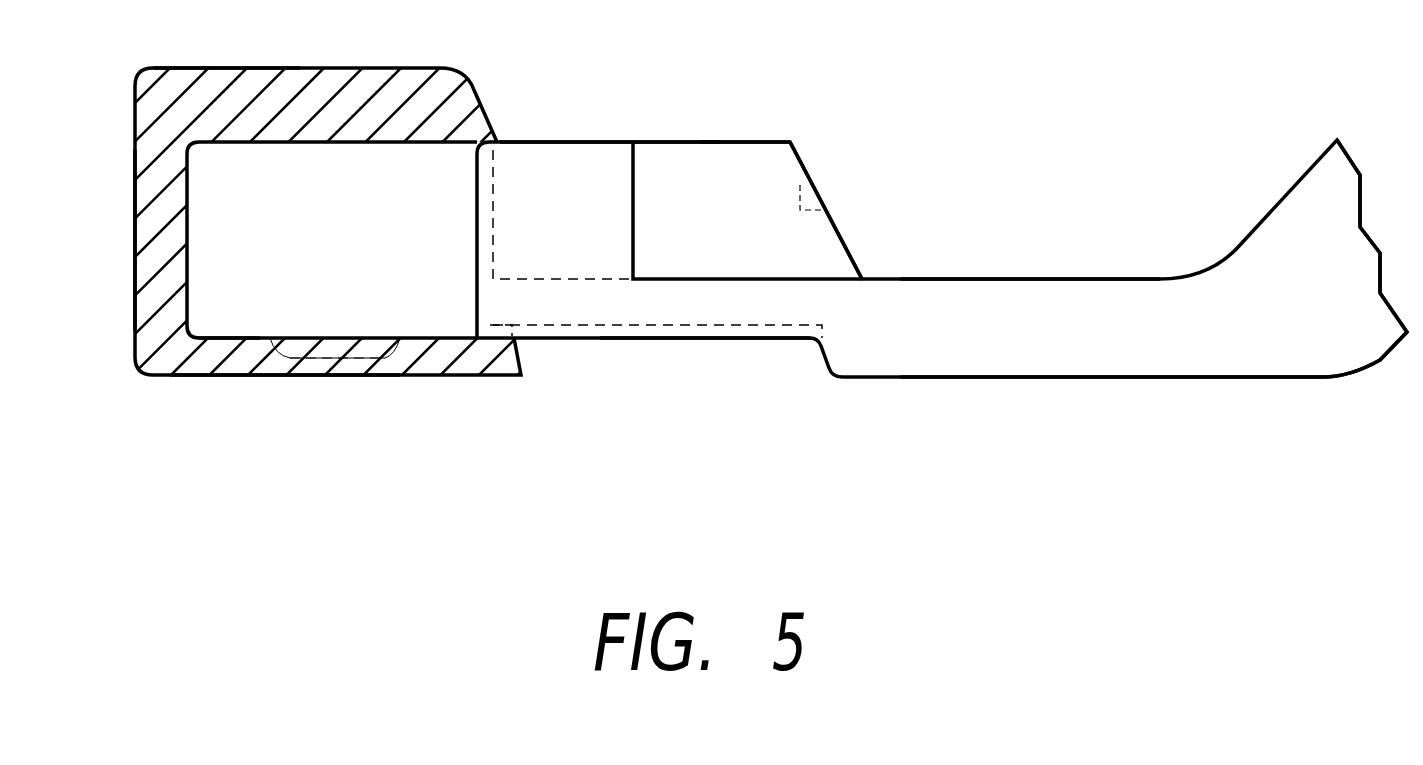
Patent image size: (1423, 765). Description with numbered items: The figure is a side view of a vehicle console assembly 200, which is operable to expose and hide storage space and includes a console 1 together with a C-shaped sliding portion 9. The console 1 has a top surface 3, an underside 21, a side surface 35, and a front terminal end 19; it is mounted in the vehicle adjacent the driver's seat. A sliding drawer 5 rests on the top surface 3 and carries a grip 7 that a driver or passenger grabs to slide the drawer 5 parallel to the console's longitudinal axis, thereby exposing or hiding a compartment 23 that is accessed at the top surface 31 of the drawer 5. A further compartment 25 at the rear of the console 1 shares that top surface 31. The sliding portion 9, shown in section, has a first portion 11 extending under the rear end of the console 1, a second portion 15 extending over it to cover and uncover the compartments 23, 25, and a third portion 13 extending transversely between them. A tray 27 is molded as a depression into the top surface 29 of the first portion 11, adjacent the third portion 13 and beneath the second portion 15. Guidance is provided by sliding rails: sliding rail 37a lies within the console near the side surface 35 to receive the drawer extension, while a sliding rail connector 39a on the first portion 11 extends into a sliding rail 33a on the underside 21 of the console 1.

The console 1 is at (1043, 323).
The top surface 3 is at (993, 279).
The sliding portion (drawer) 5 is at (763, 160).
The handle or grip 7 is at (807, 202).
The sliding portion 9 is at (163, 165).
The first portion 11 is at (268, 376).
The third portion 13 is at (135, 273).
The second portion 15 is at (172, 92).
The front terminal end 19 is at (1257, 337).
The underside (bottom surface) 21 is at (997, 378).
The compartment 23 is at (684, 142).
The compartment 25 is at (553, 140).
The tray 27 is at (298, 348).
The top surface 29 is at (222, 338).
The top surface 31 is at (613, 142).
The sliding rail 33a is at (688, 328).
The side surface 35 is at (1122, 342).
The sliding rail 37a is at (525, 182).
The sliding rail connector 39a is at (497, 333).
The console assembly 200 is at (1370, 505).